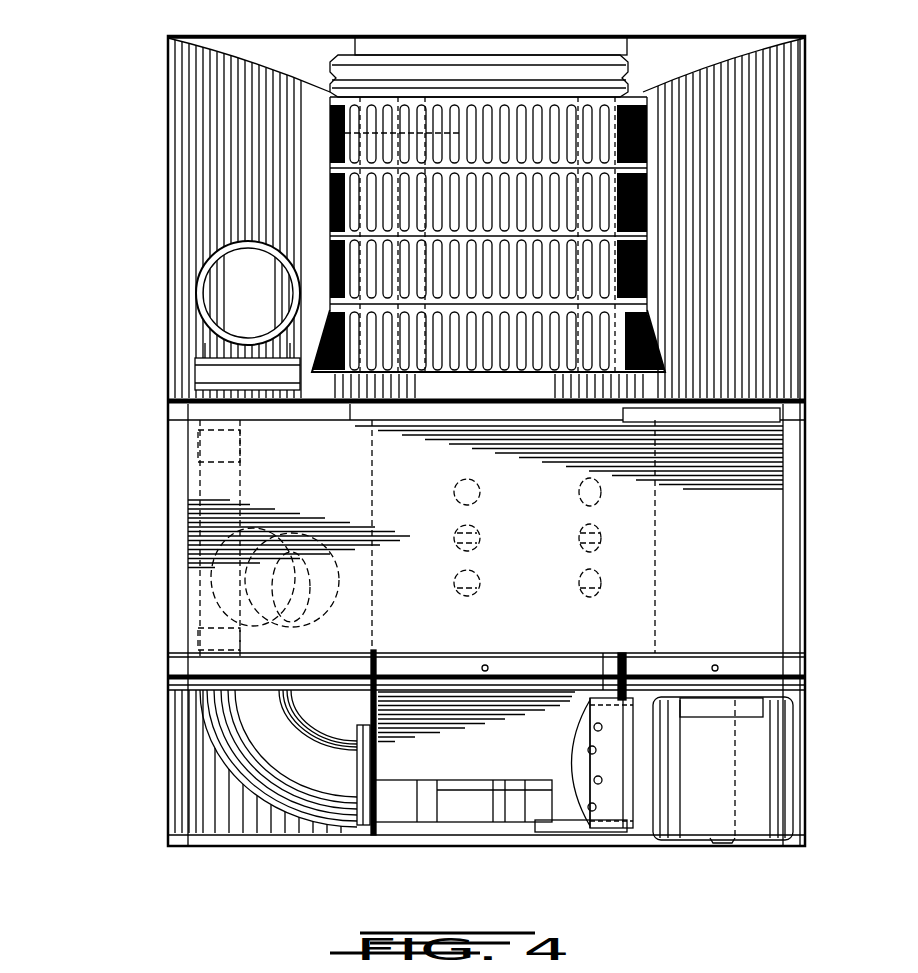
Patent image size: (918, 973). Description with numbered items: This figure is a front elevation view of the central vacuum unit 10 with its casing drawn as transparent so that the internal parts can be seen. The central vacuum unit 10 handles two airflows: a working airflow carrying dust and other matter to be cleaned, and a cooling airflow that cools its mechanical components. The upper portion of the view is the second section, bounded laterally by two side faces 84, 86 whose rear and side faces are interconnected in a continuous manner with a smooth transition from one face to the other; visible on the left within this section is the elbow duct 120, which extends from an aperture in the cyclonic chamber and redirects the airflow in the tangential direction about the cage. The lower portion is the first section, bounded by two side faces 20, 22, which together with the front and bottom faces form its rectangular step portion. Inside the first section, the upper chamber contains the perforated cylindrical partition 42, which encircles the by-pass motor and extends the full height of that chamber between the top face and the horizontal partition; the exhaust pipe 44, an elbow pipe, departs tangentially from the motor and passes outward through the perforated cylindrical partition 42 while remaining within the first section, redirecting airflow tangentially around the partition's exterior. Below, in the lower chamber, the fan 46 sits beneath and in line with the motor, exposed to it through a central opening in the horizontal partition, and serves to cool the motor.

The central vacuum unit 10 is at (100, 405).
The side face 20 is at (168, 757).
The side face 22 is at (805, 770).
The perforated cylindrical partition 42 is at (690, 470).
The exhaust pipe 44 is at (250, 590).
The fan 46 is at (540, 805).
The side face 84 is at (168, 186).
The side face 86 is at (805, 187).
The elbow duct 120 is at (200, 276).